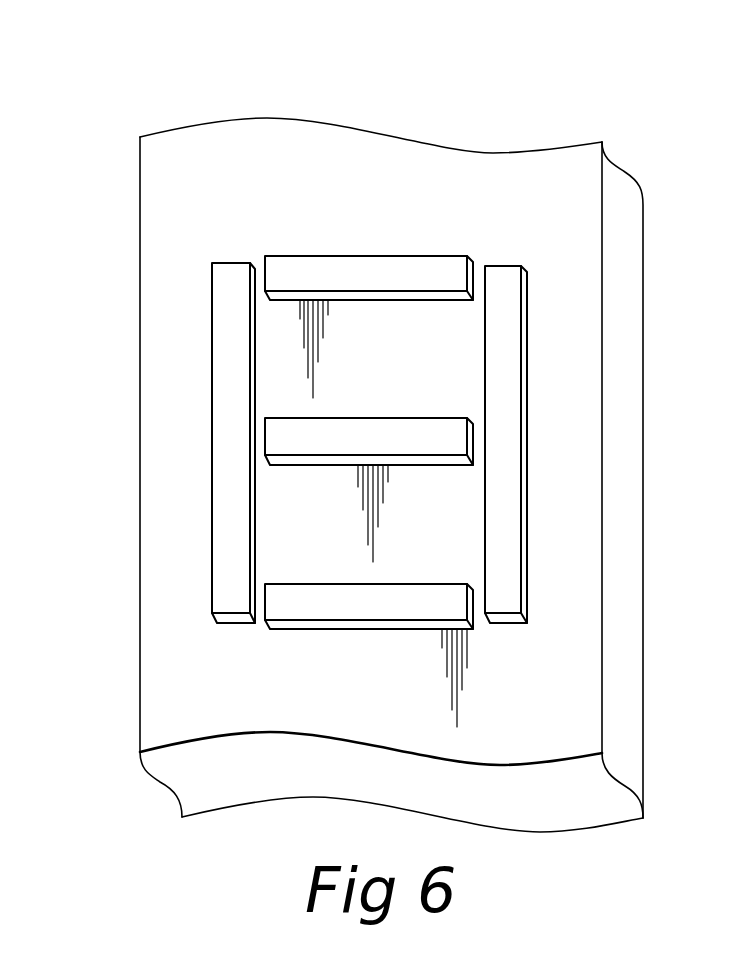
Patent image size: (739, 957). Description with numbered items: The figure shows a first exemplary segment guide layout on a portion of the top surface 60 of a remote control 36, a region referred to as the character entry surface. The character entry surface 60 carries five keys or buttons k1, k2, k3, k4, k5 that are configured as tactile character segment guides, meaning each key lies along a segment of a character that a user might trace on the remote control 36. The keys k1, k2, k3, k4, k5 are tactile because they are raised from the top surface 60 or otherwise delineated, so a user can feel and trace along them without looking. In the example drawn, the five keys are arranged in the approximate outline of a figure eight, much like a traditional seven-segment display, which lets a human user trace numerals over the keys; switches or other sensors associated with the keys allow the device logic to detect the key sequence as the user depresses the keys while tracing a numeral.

The remote control 36 is at (216, 74).
The top surface 60 is at (513, 165).
The key k1 is at (369, 327).
The key k2 is at (233, 443).
The key k3 is at (369, 655).
The key k4 is at (506, 444).
The key k5 is at (369, 490).